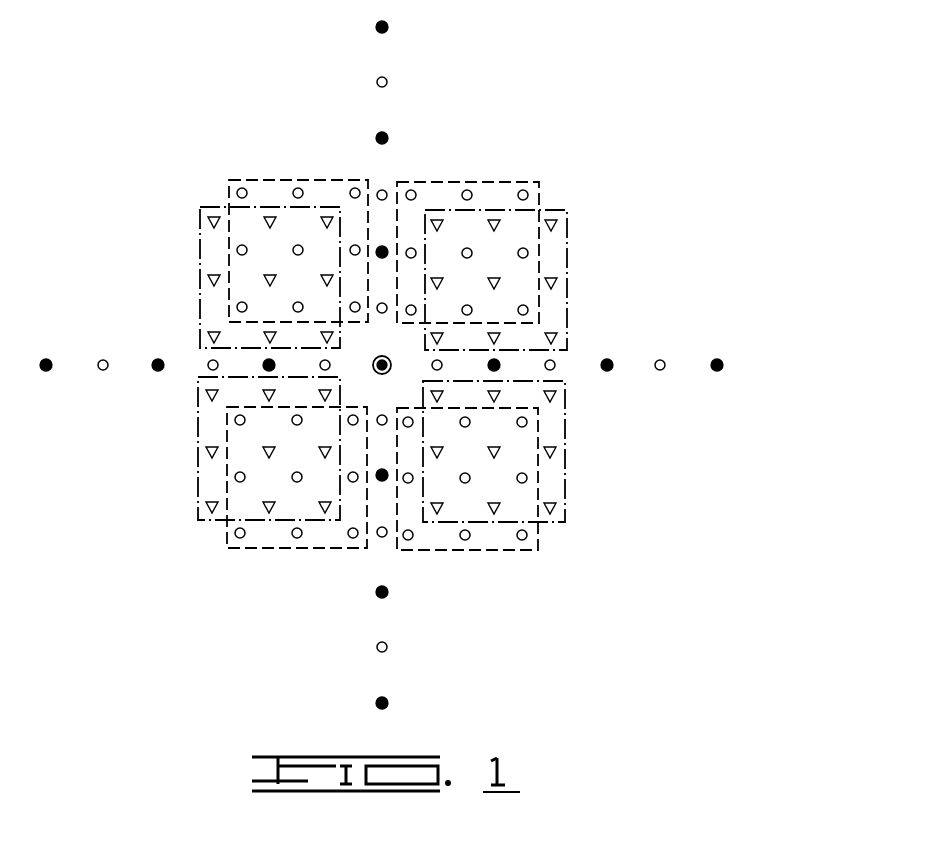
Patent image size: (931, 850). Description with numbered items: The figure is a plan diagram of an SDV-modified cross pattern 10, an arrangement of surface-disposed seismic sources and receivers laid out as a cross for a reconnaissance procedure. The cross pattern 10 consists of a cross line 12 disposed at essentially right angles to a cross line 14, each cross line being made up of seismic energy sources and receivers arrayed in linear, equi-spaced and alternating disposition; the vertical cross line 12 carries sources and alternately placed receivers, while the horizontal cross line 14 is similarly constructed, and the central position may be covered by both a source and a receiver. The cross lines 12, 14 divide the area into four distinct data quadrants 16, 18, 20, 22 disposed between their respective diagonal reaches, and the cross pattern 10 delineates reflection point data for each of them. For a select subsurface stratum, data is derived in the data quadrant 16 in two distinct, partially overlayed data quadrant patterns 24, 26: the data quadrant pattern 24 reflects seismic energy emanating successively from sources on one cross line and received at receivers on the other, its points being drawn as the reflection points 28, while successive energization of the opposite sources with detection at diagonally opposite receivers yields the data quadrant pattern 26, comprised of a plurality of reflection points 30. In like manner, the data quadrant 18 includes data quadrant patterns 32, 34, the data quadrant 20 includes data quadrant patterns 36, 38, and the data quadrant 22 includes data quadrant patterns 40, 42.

The SDV-modified cross pattern 10 is at (528, 67).
The cross line 12 is at (425, 21).
The cross line 14 is at (737, 397).
The data quadrant 16 is at (646, 234).
The data quadrant 18 is at (632, 515).
The data quadrant 20 is at (167, 517).
The data quadrant 22 is at (167, 232).
The data quadrant pattern 24 is at (458, 182).
The data quadrant pattern 26 is at (567, 263).
The receiver position 28 is at (464, 249).
The reflection points 30 is at (497, 224).
The data quadrant pattern 32 is at (565, 456).
The data quadrant pattern 34 is at (466, 551).
The data quadrant pattern 36 is at (313, 551).
The data quadrant pattern 38 is at (198, 441).
The data quadrant pattern 40 is at (200, 283).
The data quadrant pattern 42 is at (300, 179).